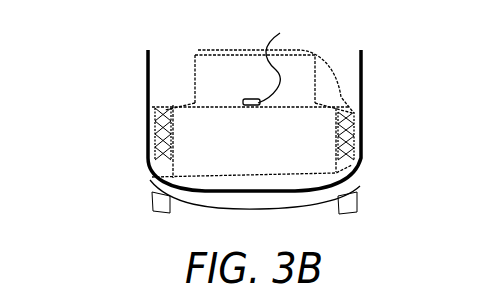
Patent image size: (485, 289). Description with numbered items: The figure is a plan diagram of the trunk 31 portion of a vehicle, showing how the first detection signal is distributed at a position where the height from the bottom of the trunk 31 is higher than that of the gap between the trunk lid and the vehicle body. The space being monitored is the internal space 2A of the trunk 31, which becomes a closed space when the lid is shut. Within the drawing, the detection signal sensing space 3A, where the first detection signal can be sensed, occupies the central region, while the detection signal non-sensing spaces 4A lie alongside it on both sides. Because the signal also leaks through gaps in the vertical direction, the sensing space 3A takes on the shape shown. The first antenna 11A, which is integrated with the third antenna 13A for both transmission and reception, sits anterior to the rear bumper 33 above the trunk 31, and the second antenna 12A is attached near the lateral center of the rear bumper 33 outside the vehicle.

The internal space 2A is at (147, 99).
The detection signal sensing space 3A is at (181, 76).
The detection signal non-sensing space 4A is at (147, 124).
The trunk 31 is at (147, 141).
The rear bumper 33 is at (148, 174).
The second antenna 12A is at (245, 197).
The first antenna 11A is at (283, 31).
The third antenna 13A is at (251, 102).